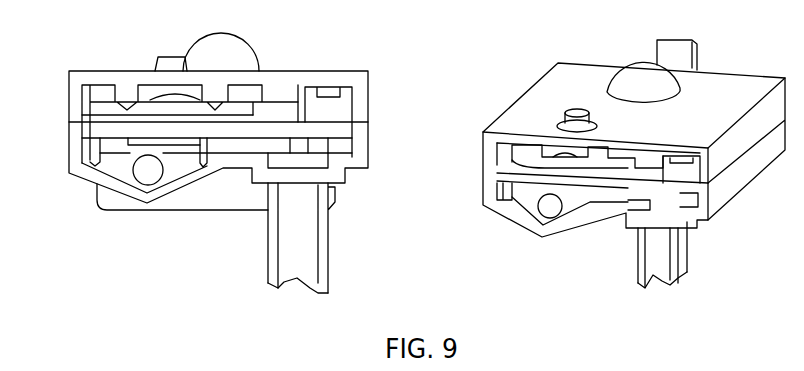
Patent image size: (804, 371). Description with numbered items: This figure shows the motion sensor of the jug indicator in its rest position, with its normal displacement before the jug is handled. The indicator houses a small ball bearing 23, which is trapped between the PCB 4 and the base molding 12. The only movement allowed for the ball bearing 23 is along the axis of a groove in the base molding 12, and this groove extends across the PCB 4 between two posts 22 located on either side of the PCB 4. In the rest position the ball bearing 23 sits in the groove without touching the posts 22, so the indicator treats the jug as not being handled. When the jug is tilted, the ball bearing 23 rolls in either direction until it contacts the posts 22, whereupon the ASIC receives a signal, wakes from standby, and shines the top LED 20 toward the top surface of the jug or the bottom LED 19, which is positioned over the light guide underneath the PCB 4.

The PCB 4 is at (95, 128).
The base molding 12 is at (118, 186).
The bottom LED 19 is at (302, 137).
The top LED 20 is at (220, 123).
The posts 22 is at (82, 150).
The ball bearing 23 is at (150, 181).